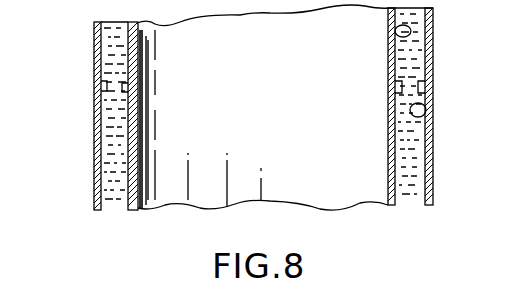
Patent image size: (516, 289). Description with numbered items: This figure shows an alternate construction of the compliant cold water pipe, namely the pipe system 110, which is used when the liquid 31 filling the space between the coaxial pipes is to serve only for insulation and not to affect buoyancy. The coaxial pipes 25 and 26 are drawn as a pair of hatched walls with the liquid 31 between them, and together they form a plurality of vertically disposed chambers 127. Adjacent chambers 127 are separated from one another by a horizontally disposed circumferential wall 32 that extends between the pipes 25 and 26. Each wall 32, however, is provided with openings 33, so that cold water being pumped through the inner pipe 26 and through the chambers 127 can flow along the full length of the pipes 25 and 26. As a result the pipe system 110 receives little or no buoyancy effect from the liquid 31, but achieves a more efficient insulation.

The pipe 25 is at (97, 140).
The pipe 26 is at (135, 150).
The liquid 31 is at (119, 165).
The circumferential wall 32 is at (137, 112).
The opening 33 is at (118, 100).
The pipe system 110 is at (92, 103).
The chamber 127 is at (394, 40).